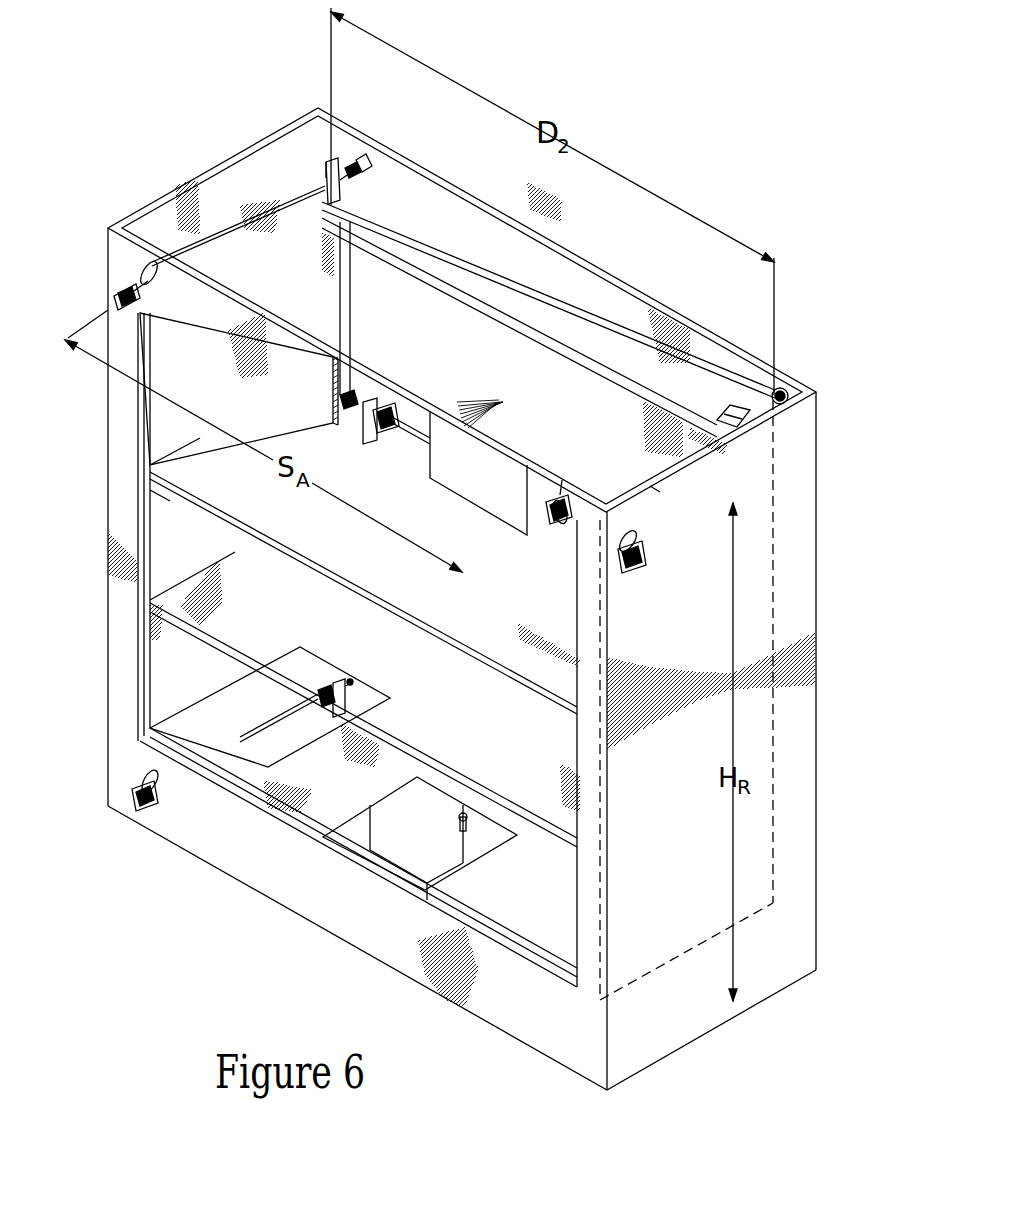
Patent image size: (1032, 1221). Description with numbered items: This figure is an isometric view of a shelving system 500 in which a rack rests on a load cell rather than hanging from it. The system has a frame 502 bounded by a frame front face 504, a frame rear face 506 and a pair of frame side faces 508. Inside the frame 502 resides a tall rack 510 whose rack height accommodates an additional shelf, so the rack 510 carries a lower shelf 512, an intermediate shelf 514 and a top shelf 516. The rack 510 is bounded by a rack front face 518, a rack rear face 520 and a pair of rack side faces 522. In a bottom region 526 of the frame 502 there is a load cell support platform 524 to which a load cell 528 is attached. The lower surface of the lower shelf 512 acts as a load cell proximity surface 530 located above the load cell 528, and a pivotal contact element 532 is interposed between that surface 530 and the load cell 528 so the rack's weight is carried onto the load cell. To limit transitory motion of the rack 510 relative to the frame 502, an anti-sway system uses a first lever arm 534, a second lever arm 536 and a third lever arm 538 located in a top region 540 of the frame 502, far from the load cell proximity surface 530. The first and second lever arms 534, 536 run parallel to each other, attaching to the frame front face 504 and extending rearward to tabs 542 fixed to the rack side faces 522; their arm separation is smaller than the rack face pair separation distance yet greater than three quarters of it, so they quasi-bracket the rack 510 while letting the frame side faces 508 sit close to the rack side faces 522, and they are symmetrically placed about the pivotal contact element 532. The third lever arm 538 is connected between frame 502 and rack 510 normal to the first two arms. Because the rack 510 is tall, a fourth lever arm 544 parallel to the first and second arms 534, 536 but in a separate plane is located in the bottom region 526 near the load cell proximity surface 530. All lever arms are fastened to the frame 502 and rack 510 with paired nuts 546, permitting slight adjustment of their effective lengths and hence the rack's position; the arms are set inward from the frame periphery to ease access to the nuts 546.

The shelving system 500 is at (645, 130).
The frame 502 is at (151, 196).
The frame front face 504 is at (123, 757).
The frame rear face 506 is at (587, 263).
The frame side faces 508 is at (145, 235).
The rack 510 is at (222, 210).
The lower shelf 512 is at (522, 952).
The intermediate shelf 514 is at (165, 602).
The top shelf 516 is at (190, 477).
The rack front face 518 is at (220, 772).
The rack rear face 520 is at (337, 277).
The rack side faces 522 is at (165, 502).
The load cell support platform 524 is at (400, 872).
The bottom region 526 is at (825, 897).
The load cell 528 is at (427, 860).
The load cell proximity surface 530 is at (350, 820).
The pivotal contact element 532 is at (468, 832).
The first lever arm 534 is at (287, 207).
The second lever arm 536 is at (700, 433).
The third lever arm 538 is at (420, 433).
The top region 540 is at (825, 482).
The tabs 542 is at (335, 163).
The fourth lever arm 544 is at (250, 688).
The paired nuts 546 is at (343, 182).